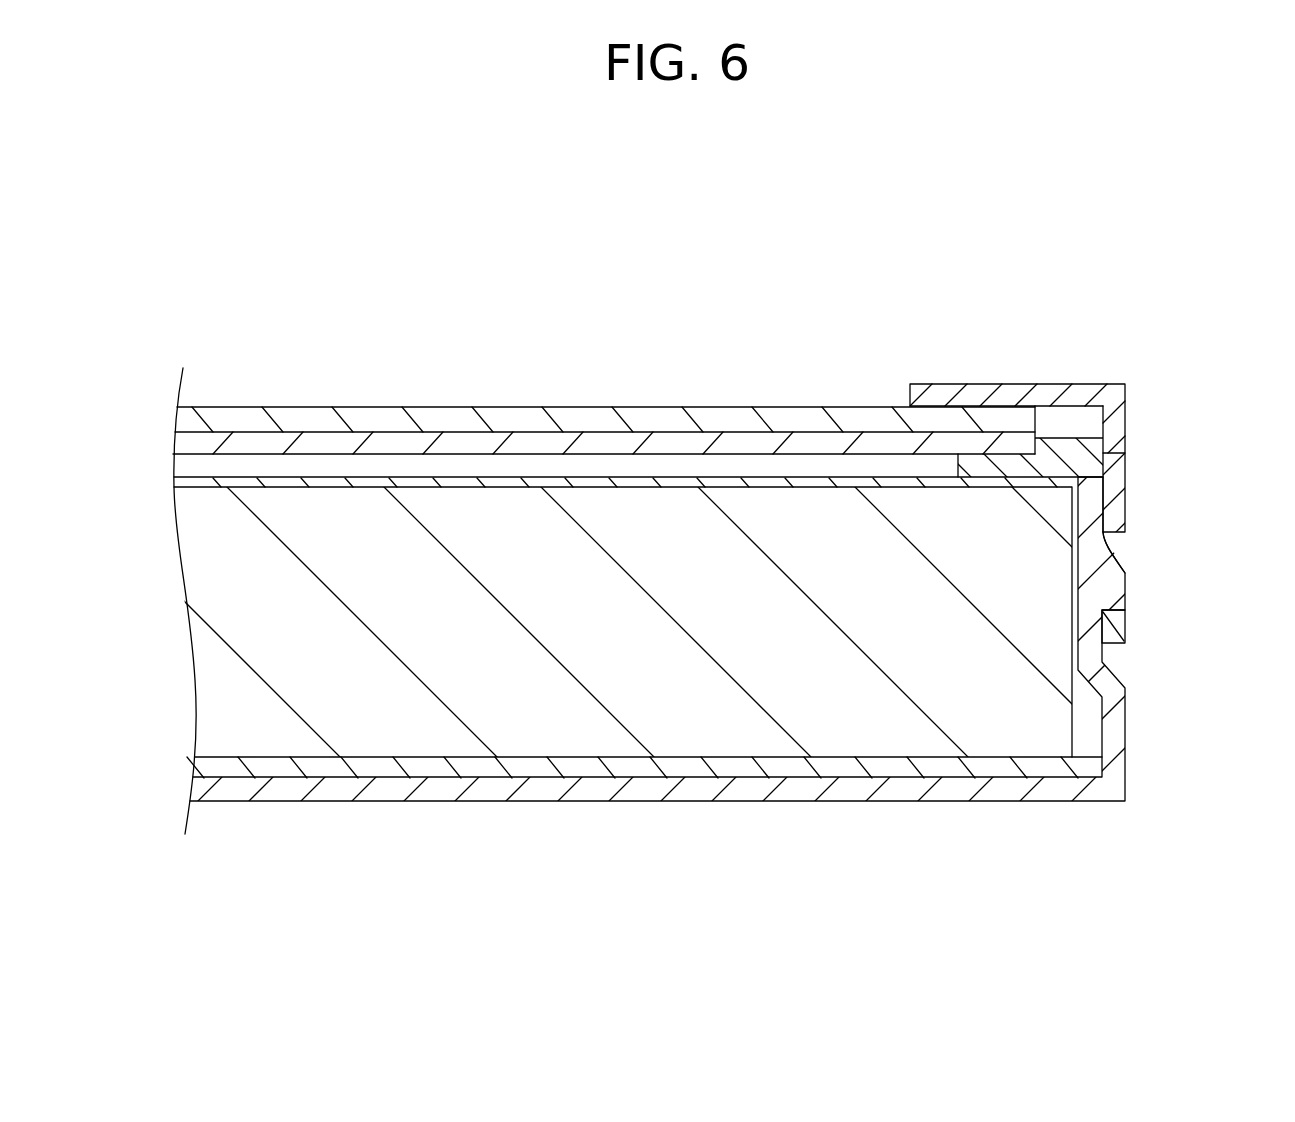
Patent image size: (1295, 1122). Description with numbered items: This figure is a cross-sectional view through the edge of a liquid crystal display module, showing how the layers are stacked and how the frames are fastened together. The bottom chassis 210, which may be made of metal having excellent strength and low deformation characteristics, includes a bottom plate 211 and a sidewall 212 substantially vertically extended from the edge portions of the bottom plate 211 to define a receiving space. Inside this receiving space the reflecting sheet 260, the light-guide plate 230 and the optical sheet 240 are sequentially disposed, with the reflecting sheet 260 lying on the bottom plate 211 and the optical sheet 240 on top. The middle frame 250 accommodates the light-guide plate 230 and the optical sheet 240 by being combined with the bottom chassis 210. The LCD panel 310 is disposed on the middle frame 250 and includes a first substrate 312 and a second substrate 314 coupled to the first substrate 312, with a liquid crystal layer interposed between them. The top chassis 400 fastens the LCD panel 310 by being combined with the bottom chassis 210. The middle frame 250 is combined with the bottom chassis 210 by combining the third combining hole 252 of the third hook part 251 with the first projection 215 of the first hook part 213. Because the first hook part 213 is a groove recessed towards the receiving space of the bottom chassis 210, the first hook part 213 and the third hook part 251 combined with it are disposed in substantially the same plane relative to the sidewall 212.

The bottom chassis 210 is at (742, 680).
The bottom plate 211 is at (1003, 792).
The sidewall 212 is at (1117, 723).
The first hook part 213 is at (1125, 513).
The first projection 215 is at (1115, 586).
The light-guide plate 230 is at (460, 520).
The optical sheet 240 is at (528, 487).
The middle frame 250 is at (1057, 485).
The third hook part 251 is at (1125, 487).
The third combining hole 252 is at (1117, 548).
The reflecting sheet 260 is at (908, 770).
The LCD panel 310 is at (604, 368).
The first substrate 312 is at (622, 445).
The second substrate 314 is at (610, 320).
The top chassis 400 is at (1118, 393).